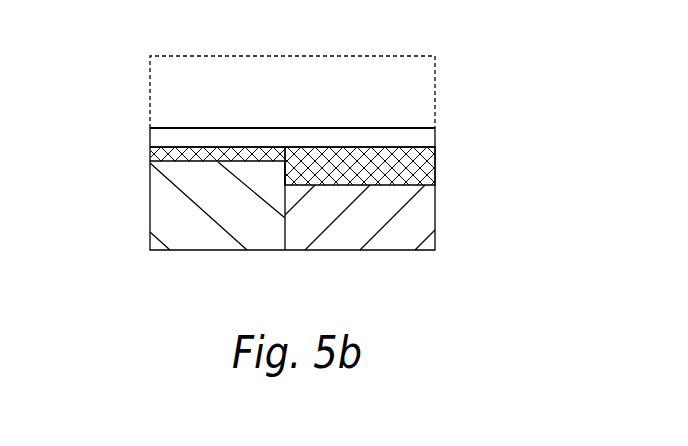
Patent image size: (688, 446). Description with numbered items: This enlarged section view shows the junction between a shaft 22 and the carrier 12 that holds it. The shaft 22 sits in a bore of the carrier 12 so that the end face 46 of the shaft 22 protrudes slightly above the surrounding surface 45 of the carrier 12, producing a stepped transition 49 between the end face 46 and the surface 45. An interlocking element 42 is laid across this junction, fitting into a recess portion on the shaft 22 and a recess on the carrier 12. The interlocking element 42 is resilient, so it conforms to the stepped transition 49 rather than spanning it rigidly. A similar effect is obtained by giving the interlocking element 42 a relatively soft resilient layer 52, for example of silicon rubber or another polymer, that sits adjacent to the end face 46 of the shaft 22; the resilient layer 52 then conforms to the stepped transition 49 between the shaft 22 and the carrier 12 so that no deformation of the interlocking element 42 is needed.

The carrier 12 is at (177, 220).
The shaft 22 is at (192, 235).
The interlocking element 42 is at (410, 126).
The surface of the carrier 45 is at (407, 173).
The end face of the shaft 46 is at (165, 155).
The stepped transition 49 is at (285, 171).
The resilient layer 52 is at (363, 172).